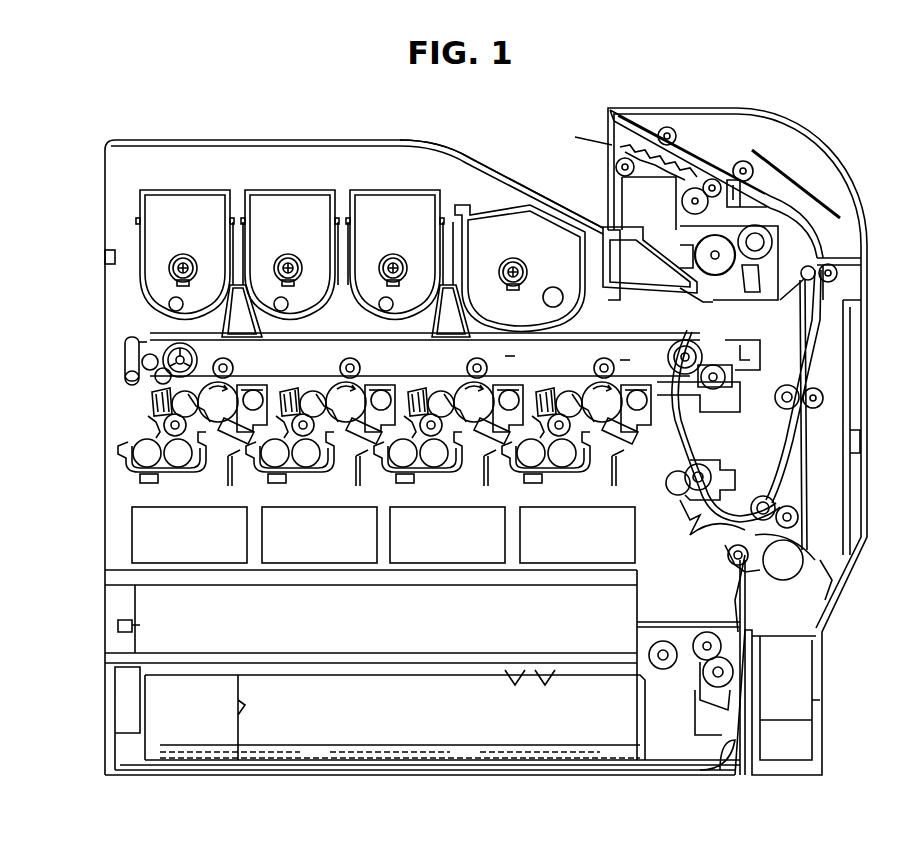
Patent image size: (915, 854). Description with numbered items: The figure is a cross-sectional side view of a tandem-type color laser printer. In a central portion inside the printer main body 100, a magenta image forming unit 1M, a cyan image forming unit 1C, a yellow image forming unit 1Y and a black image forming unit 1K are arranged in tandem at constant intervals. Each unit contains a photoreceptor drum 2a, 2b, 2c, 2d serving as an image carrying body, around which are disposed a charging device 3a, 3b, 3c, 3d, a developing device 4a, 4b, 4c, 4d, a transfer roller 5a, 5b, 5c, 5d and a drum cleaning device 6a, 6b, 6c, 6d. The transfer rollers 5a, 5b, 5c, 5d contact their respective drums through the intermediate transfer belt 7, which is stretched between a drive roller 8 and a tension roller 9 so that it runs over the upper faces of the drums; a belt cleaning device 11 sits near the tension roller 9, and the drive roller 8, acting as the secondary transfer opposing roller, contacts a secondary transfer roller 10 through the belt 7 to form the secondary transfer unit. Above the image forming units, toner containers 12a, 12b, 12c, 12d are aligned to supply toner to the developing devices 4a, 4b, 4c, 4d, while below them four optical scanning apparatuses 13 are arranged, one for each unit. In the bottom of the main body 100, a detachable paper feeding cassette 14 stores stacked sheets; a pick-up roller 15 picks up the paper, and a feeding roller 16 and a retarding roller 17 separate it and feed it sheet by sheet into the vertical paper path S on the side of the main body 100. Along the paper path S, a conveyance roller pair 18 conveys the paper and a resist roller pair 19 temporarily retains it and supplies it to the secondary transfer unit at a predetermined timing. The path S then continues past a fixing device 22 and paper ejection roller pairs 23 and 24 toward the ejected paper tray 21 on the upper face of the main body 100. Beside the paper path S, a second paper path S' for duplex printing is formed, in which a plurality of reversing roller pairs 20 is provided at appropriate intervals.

The main body 100 is at (105, 290).
The magenta image forming unit 1M is at (204, 442).
The cyan image forming unit 1C is at (334, 442).
The yellow image forming unit 1Y is at (462, 439).
The black image forming unit 1K is at (580, 418).
The photoreceptor drum 2a is at (234, 372).
The photoreceptor drum 2b is at (361, 372).
The photoreceptor drum 2c is at (486, 372).
The photoreceptor drum 2d is at (615, 376).
The charging device 3a is at (232, 448).
The charging device 3b is at (360, 448).
The charging device 3c is at (488, 446).
The charging device 3d is at (616, 443).
The developing device 4a is at (150, 430).
The developing device 4b is at (290, 462).
The developing device 4c is at (434, 460).
The developing device 4d is at (557, 440).
The transfer roller 5a is at (242, 311).
The transfer roller 5b is at (346, 340).
The transfer roller 5c is at (467, 364).
The transfer roller 5d is at (594, 364).
The drum cleaning device 6a is at (266, 390).
The drum cleaning device 6b is at (392, 390).
The drum cleaning device 6c is at (520, 390).
The drum cleaning device 6d is at (651, 338).
The intermediate transfer belt 7 is at (608, 338).
The drive roller 8 is at (697, 344).
The tension roller 9 is at (160, 344).
The secondary transfer roller 10 is at (708, 390).
The belt cleaning device 11 is at (125, 368).
The toner container 12a is at (200, 190).
The toner container 12b is at (318, 190).
The toner container 12c is at (420, 192).
The toner container 12d is at (518, 205).
The optical scanning apparatus 13 is at (183, 507).
The paper feeding cassette 14 is at (532, 740).
The pick-up roller 15 is at (660, 670).
The feeding roller 16 is at (705, 630).
The retarding roller 17 is at (735, 680).
The conveyance roller pair 18 is at (718, 560).
The resist roller pair 19 is at (720, 478).
The reversing roller pair 20 is at (672, 128).
The ejected paper tray 21 is at (492, 160).
The fixing device 22 is at (726, 278).
The paper ejection roller pair 23 is at (716, 178).
The paper ejection roller pair 24 is at (614, 167).
The paper path S is at (726, 426).
The paper path S' is at (833, 412).